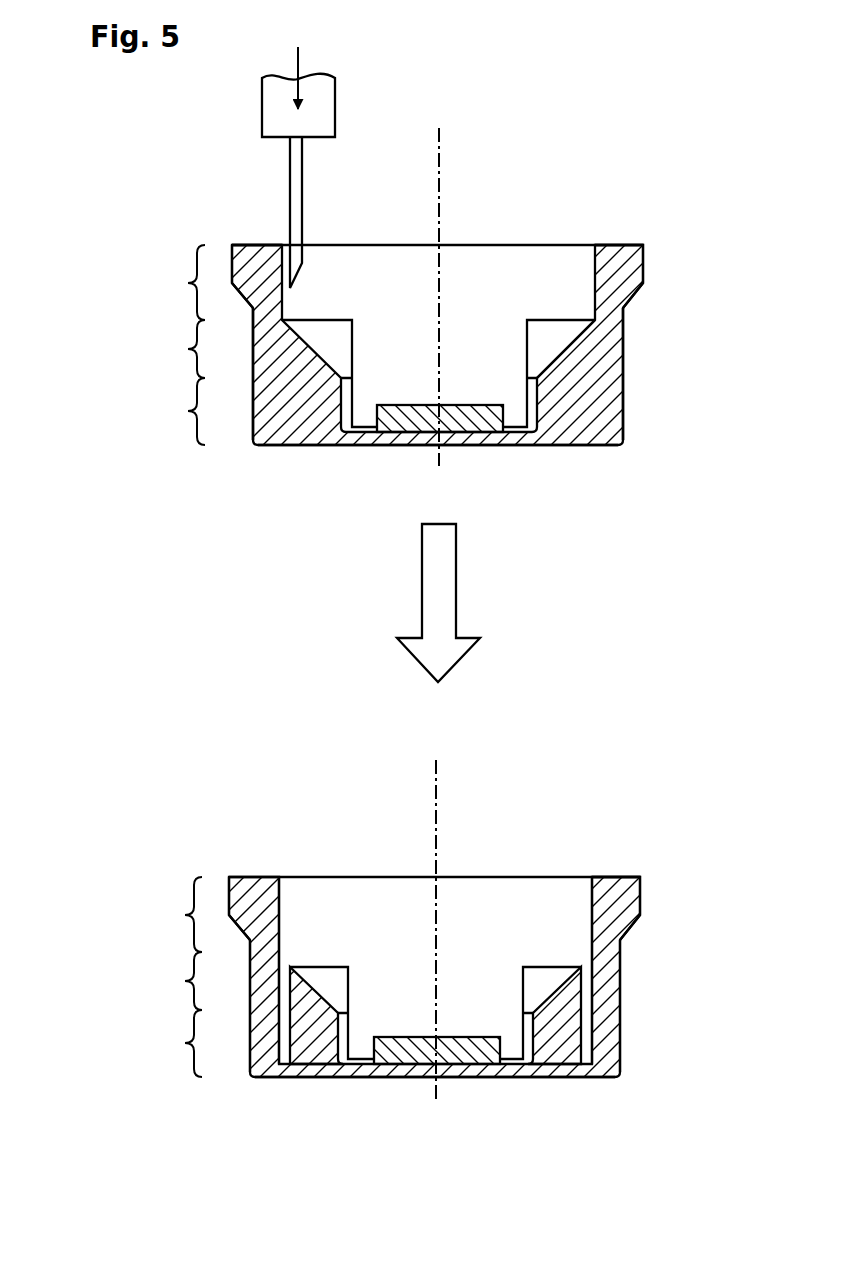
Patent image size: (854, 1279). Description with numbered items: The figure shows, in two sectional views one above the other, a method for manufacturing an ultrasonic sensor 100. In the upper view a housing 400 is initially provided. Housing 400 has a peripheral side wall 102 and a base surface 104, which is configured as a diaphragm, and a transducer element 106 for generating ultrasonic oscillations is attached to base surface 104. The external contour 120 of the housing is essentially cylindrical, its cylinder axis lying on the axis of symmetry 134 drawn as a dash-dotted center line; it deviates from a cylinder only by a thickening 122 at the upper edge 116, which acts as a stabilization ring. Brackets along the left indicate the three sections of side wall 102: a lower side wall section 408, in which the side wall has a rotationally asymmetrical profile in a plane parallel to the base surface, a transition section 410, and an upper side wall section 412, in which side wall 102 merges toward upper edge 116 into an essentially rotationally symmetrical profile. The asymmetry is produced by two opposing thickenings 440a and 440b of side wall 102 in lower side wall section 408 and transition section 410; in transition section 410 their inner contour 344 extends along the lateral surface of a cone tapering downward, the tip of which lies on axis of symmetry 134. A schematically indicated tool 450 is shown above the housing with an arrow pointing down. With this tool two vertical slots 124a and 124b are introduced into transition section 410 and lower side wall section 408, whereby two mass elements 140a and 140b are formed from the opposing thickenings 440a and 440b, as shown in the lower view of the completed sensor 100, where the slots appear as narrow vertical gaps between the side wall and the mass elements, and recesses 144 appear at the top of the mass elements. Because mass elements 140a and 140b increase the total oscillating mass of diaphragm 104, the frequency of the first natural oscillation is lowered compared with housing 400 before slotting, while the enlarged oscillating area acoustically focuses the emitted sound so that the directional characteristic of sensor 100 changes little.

The ultrasonic sensor 100 is at (220, 830).
The housing 400 is at (222, 198).
The side wall 102 is at (612, 331).
The base surface 104 is at (362, 436).
The transducer element 106 is at (492, 420).
The upper edge 116 is at (614, 239).
The external contour 120 is at (630, 400).
The thickening 122 is at (628, 268).
The vertical slot 124a is at (285, 1070).
The vertical slot 124b is at (586, 1070).
The axis of symmetry 134 is at (440, 133).
The mass element 140a is at (312, 1000).
The mass element 140b is at (560, 1000).
The recess 144 is at (333, 981).
The inner contour 344 is at (554, 352).
The lower side wall section 408 is at (172, 727).
The transition section 410 is at (172, 665).
The upper side wall section 412 is at (172, 598).
The thickening 440a is at (285, 400).
The thickening 440b is at (593, 400).
The tool 450 is at (325, 101).